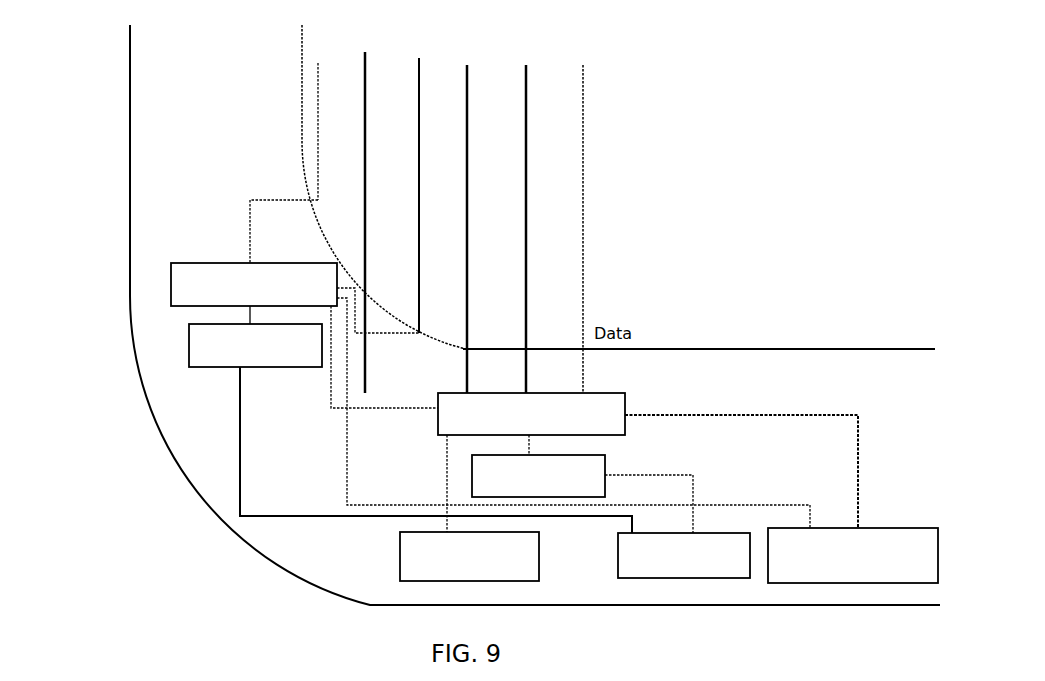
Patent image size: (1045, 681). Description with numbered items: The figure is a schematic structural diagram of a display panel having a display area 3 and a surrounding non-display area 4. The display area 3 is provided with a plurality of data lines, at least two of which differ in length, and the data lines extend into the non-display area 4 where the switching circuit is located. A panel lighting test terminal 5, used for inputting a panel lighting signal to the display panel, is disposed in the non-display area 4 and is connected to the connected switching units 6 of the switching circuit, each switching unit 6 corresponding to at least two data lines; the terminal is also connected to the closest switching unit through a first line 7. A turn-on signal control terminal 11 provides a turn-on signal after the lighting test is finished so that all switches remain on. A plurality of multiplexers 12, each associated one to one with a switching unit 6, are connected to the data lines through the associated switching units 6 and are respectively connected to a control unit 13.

The display area 3 is at (332, 110).
The non-display area 4 is at (140, 128).
The panel lighting test terminal 5 is at (397, 553).
The switching unit 6 is at (223, 262).
The first line 7 is at (443, 457).
The turn-on signal control terminal 11 is at (867, 525).
The multiplexer 12 is at (190, 343).
The control unit 13 is at (613, 553).